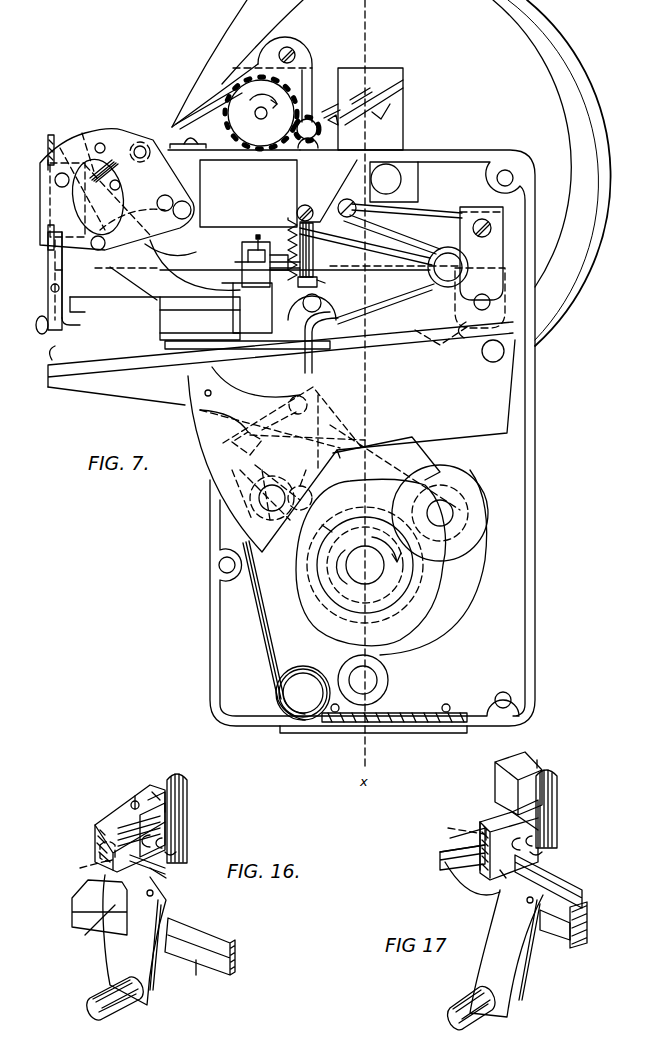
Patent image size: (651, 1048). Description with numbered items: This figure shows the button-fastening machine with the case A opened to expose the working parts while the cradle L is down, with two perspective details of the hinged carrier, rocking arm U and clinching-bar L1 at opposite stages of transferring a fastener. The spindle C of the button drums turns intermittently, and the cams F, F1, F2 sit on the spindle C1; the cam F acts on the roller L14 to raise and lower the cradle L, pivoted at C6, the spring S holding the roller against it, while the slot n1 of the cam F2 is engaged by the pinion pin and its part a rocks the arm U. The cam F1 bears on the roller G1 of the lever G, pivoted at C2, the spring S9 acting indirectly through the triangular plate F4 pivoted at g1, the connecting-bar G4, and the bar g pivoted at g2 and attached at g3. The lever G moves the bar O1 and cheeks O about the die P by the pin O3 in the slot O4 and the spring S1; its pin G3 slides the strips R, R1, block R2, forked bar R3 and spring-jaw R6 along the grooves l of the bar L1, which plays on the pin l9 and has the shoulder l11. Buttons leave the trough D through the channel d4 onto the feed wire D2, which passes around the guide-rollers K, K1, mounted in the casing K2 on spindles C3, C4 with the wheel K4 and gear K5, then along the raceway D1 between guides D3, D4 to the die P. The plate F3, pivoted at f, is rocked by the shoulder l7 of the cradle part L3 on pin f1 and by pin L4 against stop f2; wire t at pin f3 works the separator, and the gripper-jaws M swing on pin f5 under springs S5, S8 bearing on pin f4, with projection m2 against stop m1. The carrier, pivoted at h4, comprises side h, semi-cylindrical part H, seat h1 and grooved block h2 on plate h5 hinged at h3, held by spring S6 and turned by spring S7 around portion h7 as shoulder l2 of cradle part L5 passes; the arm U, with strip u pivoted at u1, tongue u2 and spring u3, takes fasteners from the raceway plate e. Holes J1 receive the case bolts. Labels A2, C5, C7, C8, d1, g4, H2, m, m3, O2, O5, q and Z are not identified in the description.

In FIG. 7, the case portion A is at (372, 441).
In FIG. 7, the arched frame portion A2 is at (525, 173).
In FIG. 7, the spindle C is at (394, 182).
In FIG. 7, the spindle C1 is at (365, 565).
In FIG. 7, the pivot C2 is at (363, 680).
In FIG. 7, the spindle C3 is at (265, 107).
In FIG. 7, the spindle C4 is at (310, 147).
In FIG. 7, the pivot C5 is at (272, 498).
In FIG. 7, the pivot C6 is at (493, 351).
In FIG. 16, the pivot pin C7 is at (90, 1008).
In FIG. 17, the pivot pin C7 is at (450, 1016).
In FIG. 7, the pivot C8 is at (440, 513).
In FIG. 7, the inclined trough D is at (392, 92).
In FIG. 7, the raceway D1 is at (193, 134).
In FIG. 7, the button-feed wire D2 is at (237, 63).
In FIG. 7, the guide D3 is at (377, 115).
In FIG. 7, the guide D4 is at (272, 79).
In FIG. 7, the cam d1 is at (186, 133).
In FIG. 7, the channeled portion d4 is at (360, 102).
In FIG. 7, the cam F is at (370, 562).
In FIG. 7, the cam F1 is at (333, 620).
In FIG. 7, the cam F2 is at (365, 565).
In FIG. 7, the plate F3 is at (117, 189).
In FIG. 7, the triangular plate F4 is at (326, 468).
In FIG. 7, the pivot f is at (191, 210).
In FIG. 7, the pin f1 is at (164, 196).
In FIG. 7, the stop f2 is at (132, 214).
In FIG. 7, the pin f3 is at (143, 146).
In FIG. 7, the pin f4 is at (102, 143).
In FIG. 7, the pin f5 is at (55, 181).
In FIG. 7, the lever G is at (420, 462).
In FIG. 7, the roller G1 is at (440, 513).
In FIG. 7, the pin G3 is at (318, 300).
In FIG. 7, the connecting-bar G4 is at (344, 460).
In FIG. 7, the bar g is at (277, 421).
In FIG. 7, the pivot g1 is at (296, 412).
In FIG. 7, the pivot g2 is at (311, 500).
In FIG. 7, the attachment point g3 is at (233, 443).
In FIG. 7, the pawl spring g4 is at (270, 492).
In FIG. 7, the semi-cylindrical part H is at (285, 280).
In FIG. 16, the semi-cylindrical part H is at (154, 830).
In FIG. 17, the semi-cylindrical part H is at (522, 815).
In FIG. 7, the plunger H2 is at (314, 246).
In FIG. 16, the plunger H2 is at (188, 812).
In FIG. 17, the plunger H2 is at (558, 806).
In FIG. 16, the side piece h is at (112, 820).
In FIG. 17, the side piece h is at (482, 860).
In FIG. 7, the fastener seat h1 is at (256, 257).
In FIG. 16, the fastener seat h1 is at (98, 848).
In FIG. 17, the fastener seat h1 is at (475, 888).
In FIG. 7, the grooved block h2 is at (242, 270).
In FIG. 16, the grooved block h2 is at (116, 832).
In FIG. 17, the grooved block h2 is at (512, 880).
In FIG. 7, the hinge h3 is at (265, 260).
In FIG. 16, the hinge h3 is at (130, 803).
In FIG. 7, the pivot h4 is at (330, 281).
In FIG. 16, the pivot h4 is at (178, 854).
In FIG. 17, the pivot h4 is at (545, 850).
In FIG. 7, the plate h5 is at (256, 248).
In FIG. 17, the plate h5 is at (484, 832).
In FIG. 16, the cylindrical portion h7 is at (166, 840).
In FIG. 17, the cylindrical portion h7 is at (545, 836).
In FIG. 7, the hole J1 is at (497, 180).
In FIG. 7, the guide-roller K is at (261, 113).
In FIG. 7, the guide-roller K1 is at (260, 98).
In FIG. 7, the casing K2 is at (361, 109).
In FIG. 7, the wheel K4 is at (307, 130).
In FIG. 7, the gear-wheel K5 is at (327, 111).
In FIG. 7, the cradle L is at (351, 446).
In FIG. 7, the clinching-bar L1 is at (228, 383).
In FIG. 16, the clinching-bar L1 is at (241, 956).
In FIG. 17, the clinching-bar L1 is at (462, 840).
In FIG. 7, the upwardly-projecting part L3 is at (195, 265).
In FIG. 7, the pin L4 is at (98, 240).
In FIG. 7, the upwardly-projecting portion L5 is at (252, 308).
In FIG. 16, the upwardly-projecting portion L5 is at (156, 801).
In FIG. 17, the upwardly-projecting portion L5 is at (518, 783).
In FIG. 7, the roller L14 is at (300, 508).
In FIG. 16, the groove l is at (196, 975).
In FIG. 17, the groove l is at (589, 922).
In FIG. 7, the shoulder l2 is at (222, 275).
In FIG. 16, the shoulder l2 is at (154, 866).
In FIG. 17, the shoulder l2 is at (488, 818).
In FIG. 7, the shoulder l7 is at (170, 248).
In FIG. 7, the pin l9 is at (214, 393).
In FIG. 7, the shoulder l11 is at (224, 398).
In FIG. 16, the shoulder l11 is at (92, 931).
In FIG. 7, the gripper-jaws M is at (48, 258).
In FIG. 7, the pin m is at (50, 288).
In FIG. 7, the stop m1 is at (46, 158).
In FIG. 7, the cam-shaped projection m2 is at (52, 270).
In FIG. 7, the arm m3 is at (96, 300).
In FIG. 7, the slot n1 is at (368, 559).
In FIG. 7, the cheeks O is at (111, 275).
In FIG. 7, the bar O1 is at (395, 279).
In FIG. 7, the plate O2 is at (481, 253).
In FIG. 7, the pin O3 is at (480, 298).
In FIG. 7, the slot O4 is at (462, 324).
In FIG. 7, the screw O5 is at (491, 229).
In FIG. 7, the die P is at (75, 308).
In FIG. 7, the pin q is at (390, 700).
In FIG. 7, the guide strip R is at (95, 370).
In FIG. 17, the guide strip R1 is at (440, 862).
In FIG. 7, the block R2 is at (308, 316).
In FIG. 7, the forked bar R3 is at (210, 342).
In FIG. 17, the forked bar R3 is at (562, 888).
In FIG. 7, the spring-jaw R6 is at (64, 368).
In FIG. 7, the spring S is at (384, 269).
In FIG. 7, the spring S1 is at (400, 213).
In FIG. 7, the spring S5 is at (47, 150).
In FIG. 7, the spring S6 is at (263, 229).
In FIG. 16, the spring S6 is at (136, 791).
In FIG. 17, the spring S6 is at (461, 824).
In FIG. 7, the spiral spring S7 is at (288, 236).
In FIG. 16, the spiral spring S7 is at (153, 787).
In FIG. 17, the spiral spring S7 is at (540, 862).
In FIG. 7, the coiled spring S8 is at (85, 145).
In FIG. 7, the spring S9 is at (262, 592).
In FIG. 7, the wire t is at (105, 177).
In FIG. 16, the rocking arm U is at (134, 940).
In FIG. 17, the rocking arm U is at (506, 953).
In FIG. 16, the strip u is at (162, 900).
In FIG. 17, the strip u is at (530, 950).
In FIG. 16, the pivot u1 is at (147, 896).
In FIG. 17, the pivot u1 is at (530, 903).
In FIG. 16, the tongue u2 is at (83, 868).
In FIG. 16, the spring u3 is at (166, 915).
In FIG. 17, the spring u3 is at (526, 965).
In FIG. 7, the bar Z is at (442, 347).
In FIG. 7, the cam part a is at (327, 519).
In FIG. 16, the curved plate e is at (167, 878).